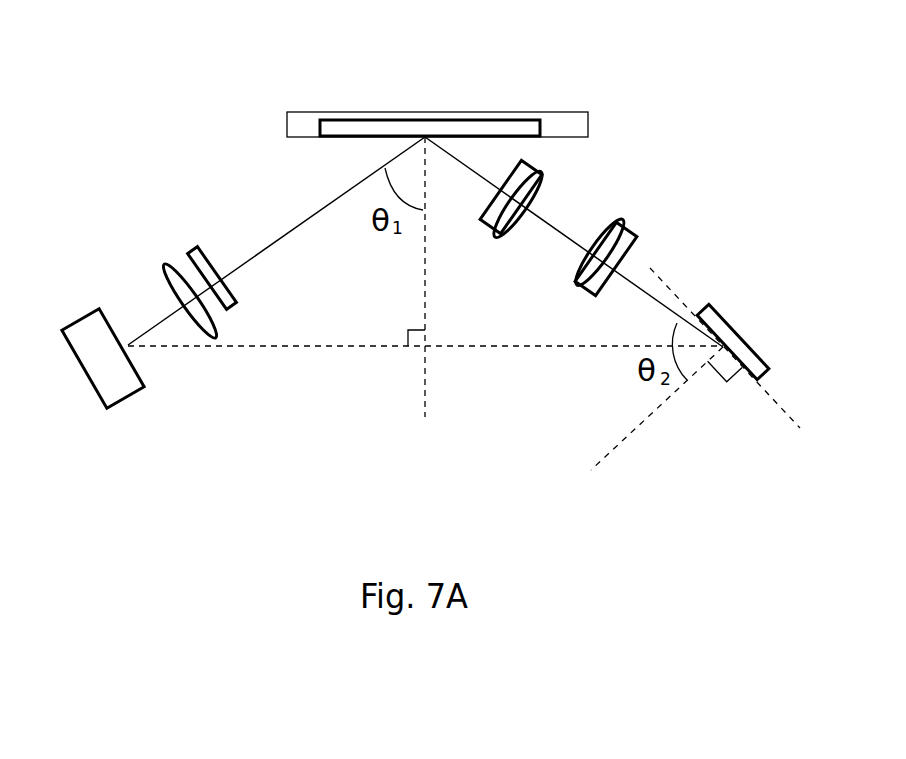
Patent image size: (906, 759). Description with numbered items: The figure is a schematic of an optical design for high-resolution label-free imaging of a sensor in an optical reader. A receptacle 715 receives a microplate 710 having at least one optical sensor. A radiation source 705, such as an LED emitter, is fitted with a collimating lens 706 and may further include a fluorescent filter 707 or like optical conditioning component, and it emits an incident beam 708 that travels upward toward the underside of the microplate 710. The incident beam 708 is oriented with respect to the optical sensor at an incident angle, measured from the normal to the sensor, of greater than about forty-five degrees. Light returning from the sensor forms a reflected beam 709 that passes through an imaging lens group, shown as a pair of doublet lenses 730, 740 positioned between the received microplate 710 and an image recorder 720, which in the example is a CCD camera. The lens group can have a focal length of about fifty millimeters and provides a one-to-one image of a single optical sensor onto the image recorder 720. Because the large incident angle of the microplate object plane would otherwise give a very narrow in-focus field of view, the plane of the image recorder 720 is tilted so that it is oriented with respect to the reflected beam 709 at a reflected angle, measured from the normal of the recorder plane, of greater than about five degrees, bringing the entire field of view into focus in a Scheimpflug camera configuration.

The radiation source 705 is at (93, 318).
The collimating lens 706 is at (182, 292).
The fluorescent filter 707 is at (197, 257).
The incident beam 708 is at (288, 230).
The reflected beam 709 is at (467, 167).
The microplate 710 is at (490, 128).
The receptacle 715 is at (385, 110).
The image recorder 720 is at (720, 316).
The doublet lens 730 is at (542, 183).
The doublet lens 740 is at (627, 250).